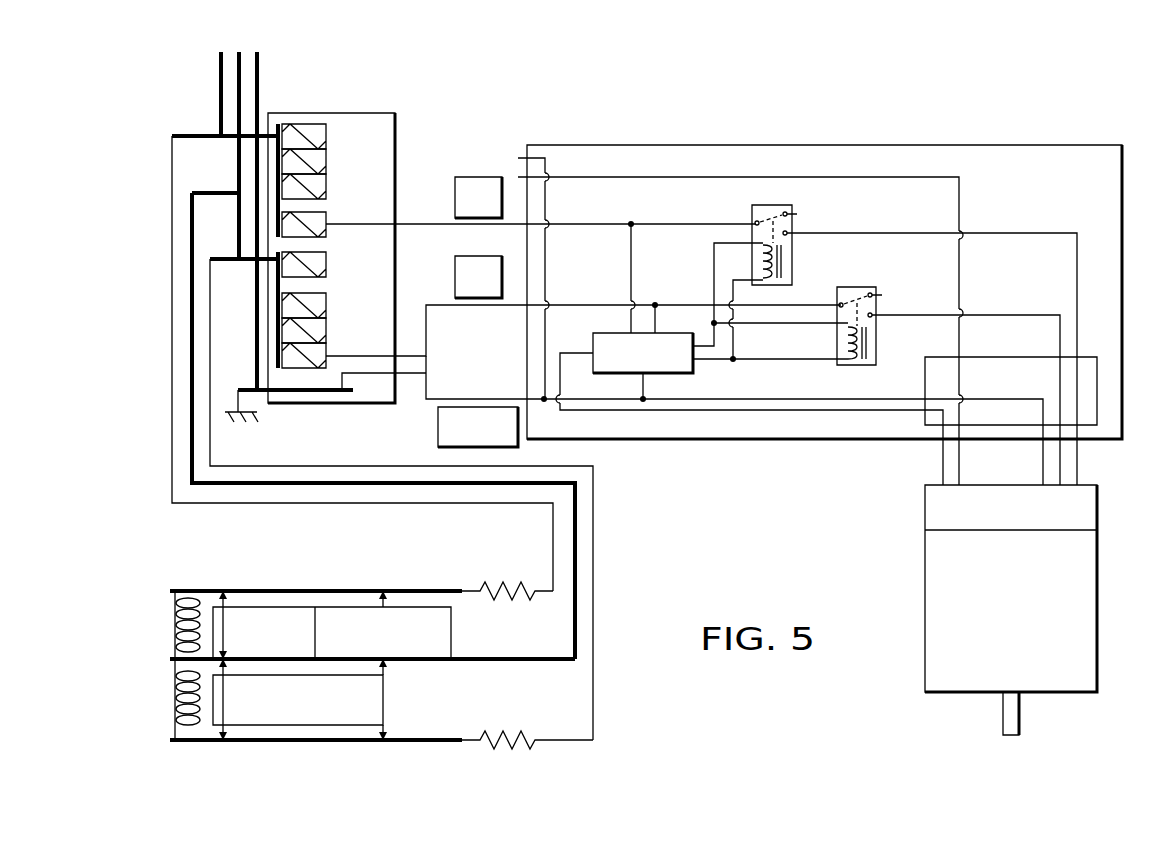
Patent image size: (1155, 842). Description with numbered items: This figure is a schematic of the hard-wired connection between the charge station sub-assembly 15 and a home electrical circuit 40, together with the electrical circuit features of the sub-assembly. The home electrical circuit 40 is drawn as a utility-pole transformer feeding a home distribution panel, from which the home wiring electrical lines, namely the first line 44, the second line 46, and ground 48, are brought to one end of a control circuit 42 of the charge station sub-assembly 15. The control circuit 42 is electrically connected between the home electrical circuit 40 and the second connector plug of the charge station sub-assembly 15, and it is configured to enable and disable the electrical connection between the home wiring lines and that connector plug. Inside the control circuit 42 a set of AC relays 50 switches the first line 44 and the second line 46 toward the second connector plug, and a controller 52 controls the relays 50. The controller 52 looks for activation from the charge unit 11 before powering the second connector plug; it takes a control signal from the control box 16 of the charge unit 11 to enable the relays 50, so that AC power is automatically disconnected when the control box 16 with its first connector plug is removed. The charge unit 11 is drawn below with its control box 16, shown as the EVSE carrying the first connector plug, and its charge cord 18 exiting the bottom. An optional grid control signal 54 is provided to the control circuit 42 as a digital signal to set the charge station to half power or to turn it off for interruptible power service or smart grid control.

The charge unit 11 is at (869, 522).
The charge station sub-assembly 15 is at (696, 59).
The control box 16 is at (925, 612).
The charge cord 18 is at (1002, 715).
The home electrical circuit 40 is at (443, 56).
The control circuit 42 is at (768, 145).
The L1 44 is at (442, 224).
The L2 46 is at (442, 305).
The ground 48 is at (497, 399).
The AC relays 50 is at (794, 224).
The controller 52 is at (593, 347).
The grid control signal 54 is at (538, 156).